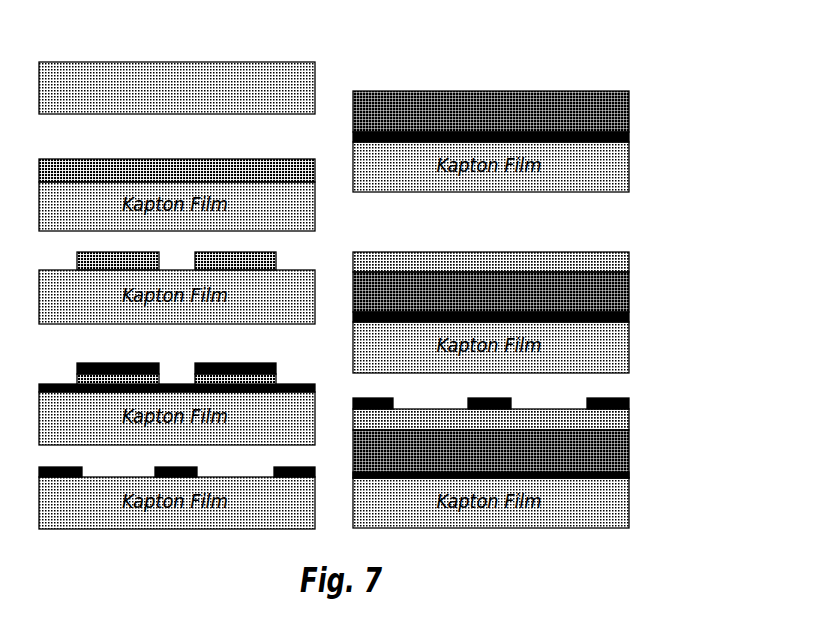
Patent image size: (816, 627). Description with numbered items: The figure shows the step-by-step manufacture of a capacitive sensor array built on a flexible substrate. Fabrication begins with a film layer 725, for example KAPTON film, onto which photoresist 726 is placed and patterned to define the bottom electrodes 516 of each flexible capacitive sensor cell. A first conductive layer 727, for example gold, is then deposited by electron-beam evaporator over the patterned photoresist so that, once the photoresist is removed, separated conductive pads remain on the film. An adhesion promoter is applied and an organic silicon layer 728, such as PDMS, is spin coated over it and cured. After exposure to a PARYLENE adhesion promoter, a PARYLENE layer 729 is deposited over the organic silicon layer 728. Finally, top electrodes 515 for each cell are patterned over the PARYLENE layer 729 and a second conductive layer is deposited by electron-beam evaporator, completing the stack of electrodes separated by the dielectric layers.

The film layer 725 is at (157, 62).
The photoresist 726 is at (278, 127).
The first conductive layer 727 is at (243, 343).
The organic silicon layer 728 is at (590, 62).
The PARYLENE layer 729 is at (575, 228).
The top electrodes 515 is at (628, 399).
The bottom electrodes 516 is at (630, 453).